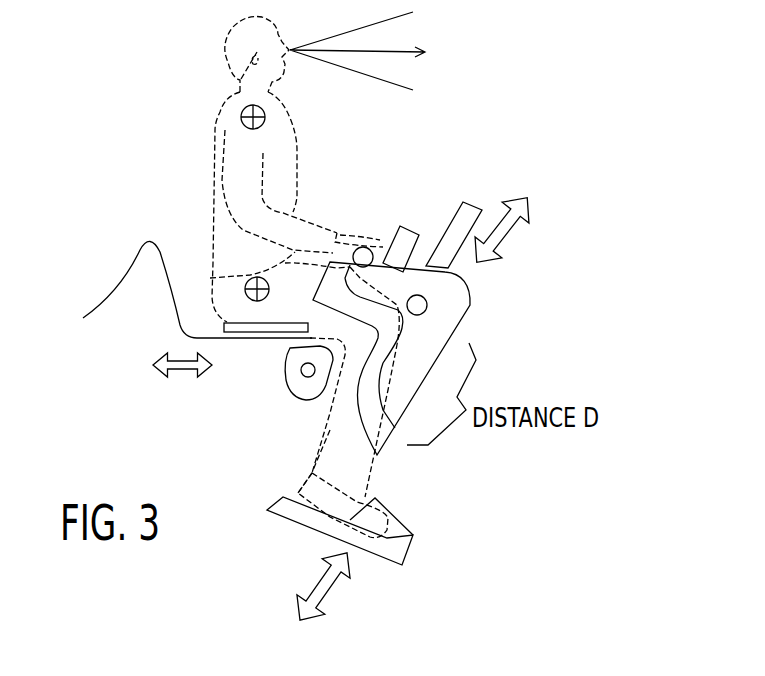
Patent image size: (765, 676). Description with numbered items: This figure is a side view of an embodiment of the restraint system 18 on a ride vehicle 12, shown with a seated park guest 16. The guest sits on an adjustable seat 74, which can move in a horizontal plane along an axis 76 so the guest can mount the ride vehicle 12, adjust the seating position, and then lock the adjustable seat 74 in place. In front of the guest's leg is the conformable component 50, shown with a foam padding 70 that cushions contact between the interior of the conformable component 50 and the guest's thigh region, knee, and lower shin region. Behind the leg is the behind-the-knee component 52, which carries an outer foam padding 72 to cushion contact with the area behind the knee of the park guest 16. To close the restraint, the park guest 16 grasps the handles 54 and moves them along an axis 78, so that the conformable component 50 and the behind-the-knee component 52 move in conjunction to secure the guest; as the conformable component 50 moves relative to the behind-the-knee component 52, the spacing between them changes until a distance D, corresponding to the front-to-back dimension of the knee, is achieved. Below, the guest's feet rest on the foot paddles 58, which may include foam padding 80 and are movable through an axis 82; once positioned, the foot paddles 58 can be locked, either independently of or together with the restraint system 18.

The ride vehicle 12 is at (143, 320).
The park guest 16 is at (218, 117).
The restraint system 18 is at (490, 302).
The conformable component 50 is at (461, 325).
The behind-the-knee component 52 is at (302, 374).
The handles 54 is at (412, 226).
The foot paddles 58 is at (397, 540).
The foam padding 70 is at (370, 410).
The outer foam padding 72 is at (303, 399).
The adjustable seat 74 is at (223, 325).
The axis 76 is at (182, 373).
The axis 78 is at (513, 232).
The foam padding 80 is at (373, 549).
The axis 82 is at (315, 582).